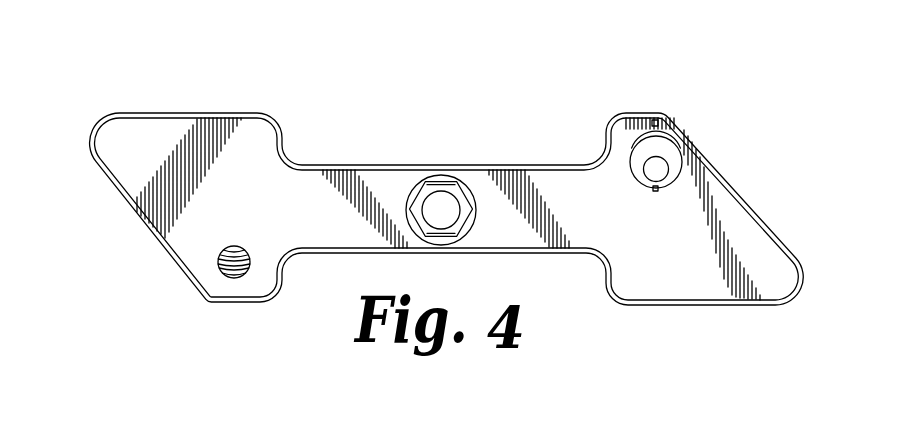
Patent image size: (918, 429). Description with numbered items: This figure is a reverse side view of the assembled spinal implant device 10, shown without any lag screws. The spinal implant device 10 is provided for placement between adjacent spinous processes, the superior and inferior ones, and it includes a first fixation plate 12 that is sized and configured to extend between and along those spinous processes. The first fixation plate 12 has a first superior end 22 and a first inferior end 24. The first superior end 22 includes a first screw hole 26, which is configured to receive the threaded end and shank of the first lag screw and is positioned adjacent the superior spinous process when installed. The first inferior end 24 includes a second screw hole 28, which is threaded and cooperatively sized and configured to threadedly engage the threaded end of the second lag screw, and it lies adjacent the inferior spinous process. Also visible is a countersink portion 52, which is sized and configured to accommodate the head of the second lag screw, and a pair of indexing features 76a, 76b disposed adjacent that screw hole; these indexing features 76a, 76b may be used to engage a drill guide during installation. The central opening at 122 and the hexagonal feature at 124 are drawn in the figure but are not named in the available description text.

The spinal implant device 10 is at (447, 154).
The first fixation plate 12 is at (315, 175).
The first superior end 22 is at (725, 192).
The first inferior end 24 is at (173, 242).
The first screw hole 26 is at (683, 123).
The second screw hole 28 is at (222, 293).
The countersink portion 52 is at (637, 152).
The indexing feature 76a is at (652, 121).
The indexing feature 76b is at (655, 192).
The bore 122 is at (435, 197).
The hex nut 124 is at (447, 186).